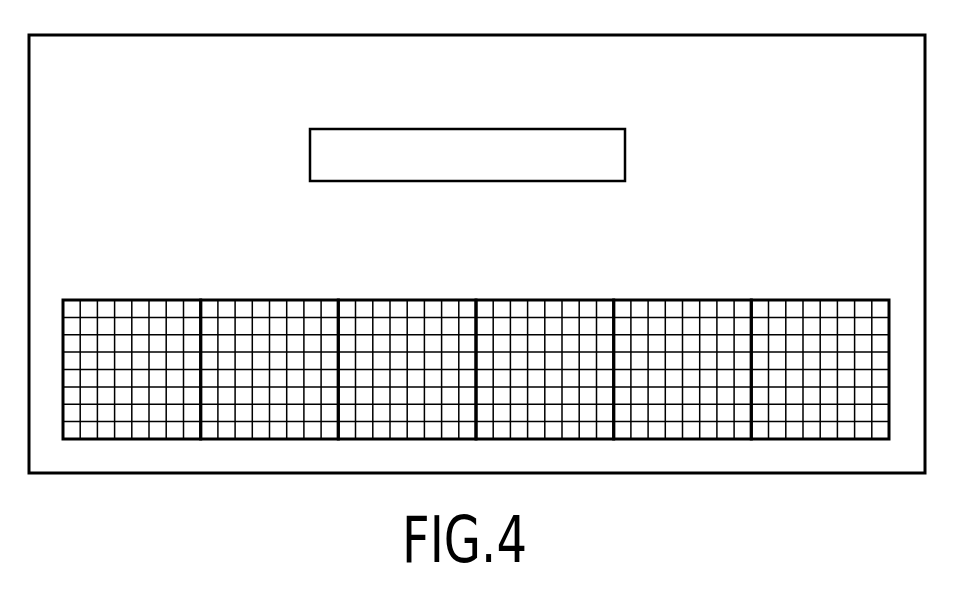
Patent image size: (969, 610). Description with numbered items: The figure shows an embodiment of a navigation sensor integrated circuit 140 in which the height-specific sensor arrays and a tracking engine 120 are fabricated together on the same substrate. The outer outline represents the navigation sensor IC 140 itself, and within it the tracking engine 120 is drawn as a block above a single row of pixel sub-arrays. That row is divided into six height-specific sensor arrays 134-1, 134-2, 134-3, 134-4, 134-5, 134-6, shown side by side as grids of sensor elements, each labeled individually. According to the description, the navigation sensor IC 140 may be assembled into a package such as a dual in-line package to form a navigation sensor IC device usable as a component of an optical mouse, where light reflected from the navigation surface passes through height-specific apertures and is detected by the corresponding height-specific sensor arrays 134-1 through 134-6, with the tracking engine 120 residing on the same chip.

The navigation sensor integrated circuit 140 is at (413, 87).
The tracking engine 120 is at (603, 169).
The height-specific sensor array 134-1 is at (819, 300).
The height-specific sensor array 134-2 is at (681, 300).
The height-specific sensor array 134-3 is at (542, 300).
The height-specific sensor array 134-4 is at (403, 300).
The height-specific sensor array 134-5 is at (265, 300).
The height-specific sensor array 134-6 is at (127, 300).